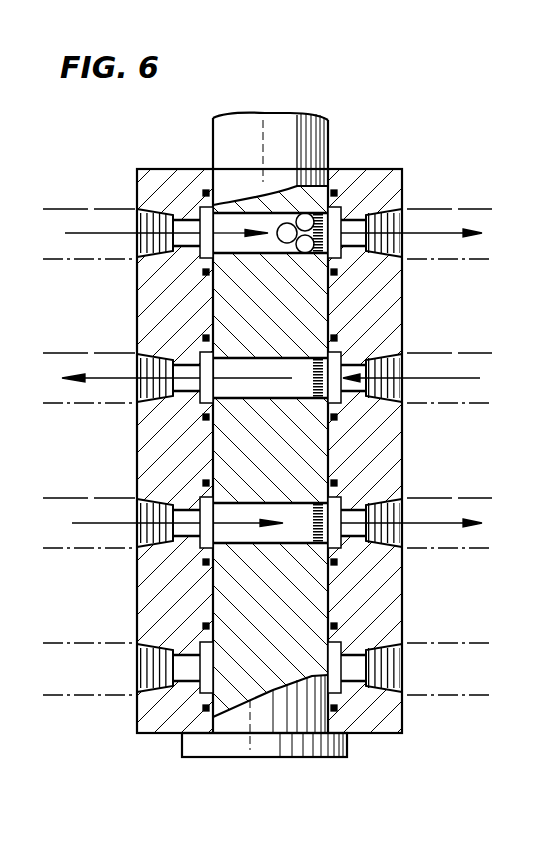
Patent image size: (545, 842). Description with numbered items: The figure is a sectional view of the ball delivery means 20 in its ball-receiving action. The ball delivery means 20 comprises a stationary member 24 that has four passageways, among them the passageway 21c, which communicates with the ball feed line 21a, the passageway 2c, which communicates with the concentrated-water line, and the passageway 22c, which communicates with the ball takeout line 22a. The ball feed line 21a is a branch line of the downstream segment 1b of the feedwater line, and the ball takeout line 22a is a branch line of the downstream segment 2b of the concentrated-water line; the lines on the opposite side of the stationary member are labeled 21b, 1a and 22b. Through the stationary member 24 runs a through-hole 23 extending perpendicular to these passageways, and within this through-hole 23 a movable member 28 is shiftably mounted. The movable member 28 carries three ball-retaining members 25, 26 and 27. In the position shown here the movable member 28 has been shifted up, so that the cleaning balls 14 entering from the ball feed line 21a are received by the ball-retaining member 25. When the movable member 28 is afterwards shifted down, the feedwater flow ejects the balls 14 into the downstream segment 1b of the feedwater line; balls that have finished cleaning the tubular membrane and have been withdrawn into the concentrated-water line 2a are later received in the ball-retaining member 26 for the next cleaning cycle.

The ball delivery means 20 is at (367, 113).
The movable member 28 is at (318, 114).
The stationary member 24 is at (152, 170).
The through-hole 23 is at (214, 190).
The ball-retaining member 25 is at (230, 252).
The cleaning balls 14 is at (302, 250).
The ball-retaining member 26 is at (258, 366).
The ball-retaining member 27 is at (262, 520).
The ball feed line 21a is at (90, 208).
The outlet port 21b is at (442, 210).
The passageway 21c is at (350, 220).
The port 1a is at (436, 351).
The downstream segment of feedwater line 1b is at (80, 351).
The concentrated-water line 2a is at (87, 497).
The downstream segment of concentrated-water line 2b is at (450, 485).
The passageway 2c is at (347, 512).
The ball takeout line 22a is at (466, 630).
The port 22b is at (102, 642).
The passageway 22c is at (346, 655).